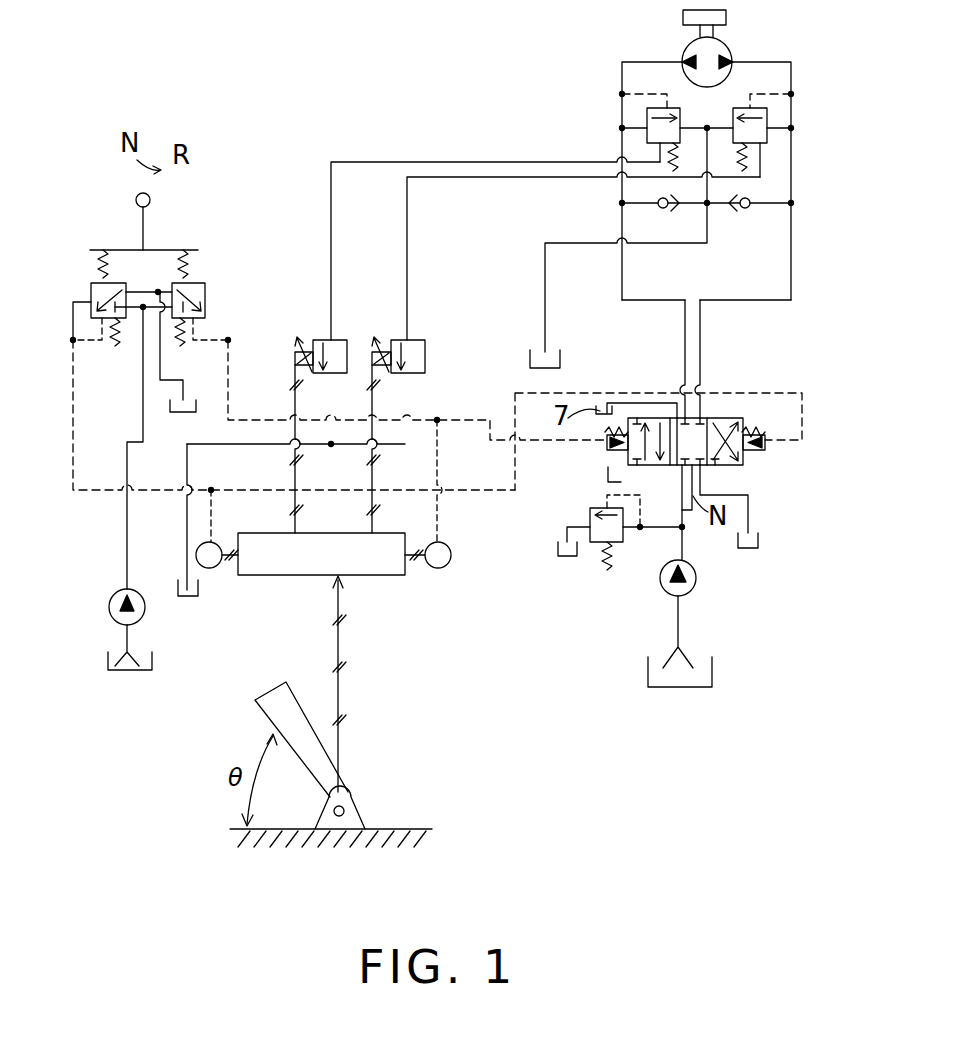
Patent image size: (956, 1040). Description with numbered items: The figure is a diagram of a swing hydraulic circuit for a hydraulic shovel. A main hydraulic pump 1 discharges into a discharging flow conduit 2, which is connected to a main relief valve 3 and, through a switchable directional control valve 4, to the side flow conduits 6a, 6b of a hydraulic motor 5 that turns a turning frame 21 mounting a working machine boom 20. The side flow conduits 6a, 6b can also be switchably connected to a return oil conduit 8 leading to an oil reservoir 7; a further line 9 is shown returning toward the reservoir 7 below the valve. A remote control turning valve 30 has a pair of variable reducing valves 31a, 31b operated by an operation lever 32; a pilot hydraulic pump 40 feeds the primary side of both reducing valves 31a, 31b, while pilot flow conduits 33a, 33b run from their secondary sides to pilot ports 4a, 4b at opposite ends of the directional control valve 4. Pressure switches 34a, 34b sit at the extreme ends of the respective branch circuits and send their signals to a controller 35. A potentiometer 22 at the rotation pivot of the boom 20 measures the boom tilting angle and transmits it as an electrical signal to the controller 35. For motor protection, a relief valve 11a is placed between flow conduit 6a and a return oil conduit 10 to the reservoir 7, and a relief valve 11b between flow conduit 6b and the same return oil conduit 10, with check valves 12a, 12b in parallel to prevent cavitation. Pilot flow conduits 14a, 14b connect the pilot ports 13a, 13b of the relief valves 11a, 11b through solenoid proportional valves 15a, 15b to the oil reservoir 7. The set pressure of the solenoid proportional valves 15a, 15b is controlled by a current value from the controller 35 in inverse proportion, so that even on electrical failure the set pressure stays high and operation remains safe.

The main hydraulic pump 1 is at (696, 586).
The discharging flow conduit 2 is at (684, 536).
The main relief valve 3 is at (607, 566).
The directional control valve 4 is at (735, 468).
The pilot port 4a is at (600, 452).
The pilot port 4b is at (766, 449).
The hydraulic motor 5 is at (732, 52).
The side flow conduit 6a is at (622, 68).
The side flow conduit 6b is at (791, 86).
The oil reservoir 7 is at (562, 356).
The return oil conduit 8 is at (645, 403).
The return line 9 is at (750, 527).
The return oil conduit 10 is at (572, 246).
The relief valve 11a is at (647, 116).
The relief valve 11b is at (767, 121).
The check valve 12a is at (660, 208).
The check valve 12b is at (747, 210).
The pilot port 13a is at (655, 143).
The pilot port 13b is at (760, 137).
The pilot flow conduit 14a is at (360, 162).
The pilot flow conduit 14b is at (470, 182).
The solenoid proportional valve 15a is at (340, 340).
The solenoid proportional valve 15b is at (412, 340).
The working machine boom 20 is at (325, 752).
The turning frame 21 is at (726, 17).
The potentiometer 22 is at (346, 812).
The remote control turning valve 30 is at (100, 236).
The variable reducing valve 31a is at (205, 291).
The variable reducing valve 31b is at (95, 290).
The operation lever 32 is at (150, 210).
The pilot flow conduit 33a is at (228, 372).
The pilot flow conduit 33b is at (76, 492).
The pressure switch 34a is at (448, 565).
The pressure switch 34b is at (215, 568).
The controller 35 is at (388, 575).
The pilot hydraulic pump 40 is at (109, 614).